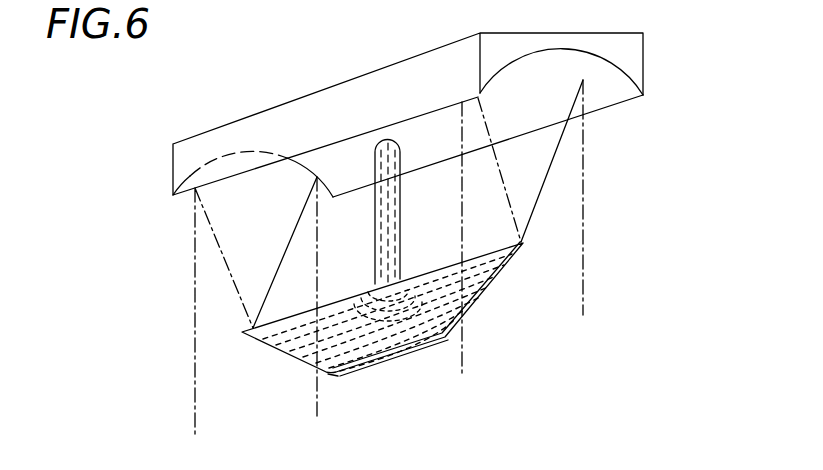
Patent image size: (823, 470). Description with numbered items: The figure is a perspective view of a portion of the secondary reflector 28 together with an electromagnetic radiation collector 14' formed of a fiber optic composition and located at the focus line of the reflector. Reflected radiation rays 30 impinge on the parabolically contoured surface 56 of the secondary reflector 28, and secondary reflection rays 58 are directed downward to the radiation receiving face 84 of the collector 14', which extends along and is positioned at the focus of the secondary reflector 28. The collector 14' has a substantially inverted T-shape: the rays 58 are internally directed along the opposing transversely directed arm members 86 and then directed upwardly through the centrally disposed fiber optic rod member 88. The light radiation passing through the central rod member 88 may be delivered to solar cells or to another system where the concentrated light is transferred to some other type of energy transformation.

The secondary reflector 28 is at (345, 77).
The parabolically contoured surface 56 is at (629, 88).
The secondary reflection rays 58 is at (552, 160).
The reflected radiation rays 30 is at (583, 203).
The fiber optic rod member 88 is at (393, 222).
The radiation receiving face 84 is at (334, 302).
The transversely directed arm members 86 is at (418, 326).
The electromagnetic radiation collector 14' is at (390, 307).